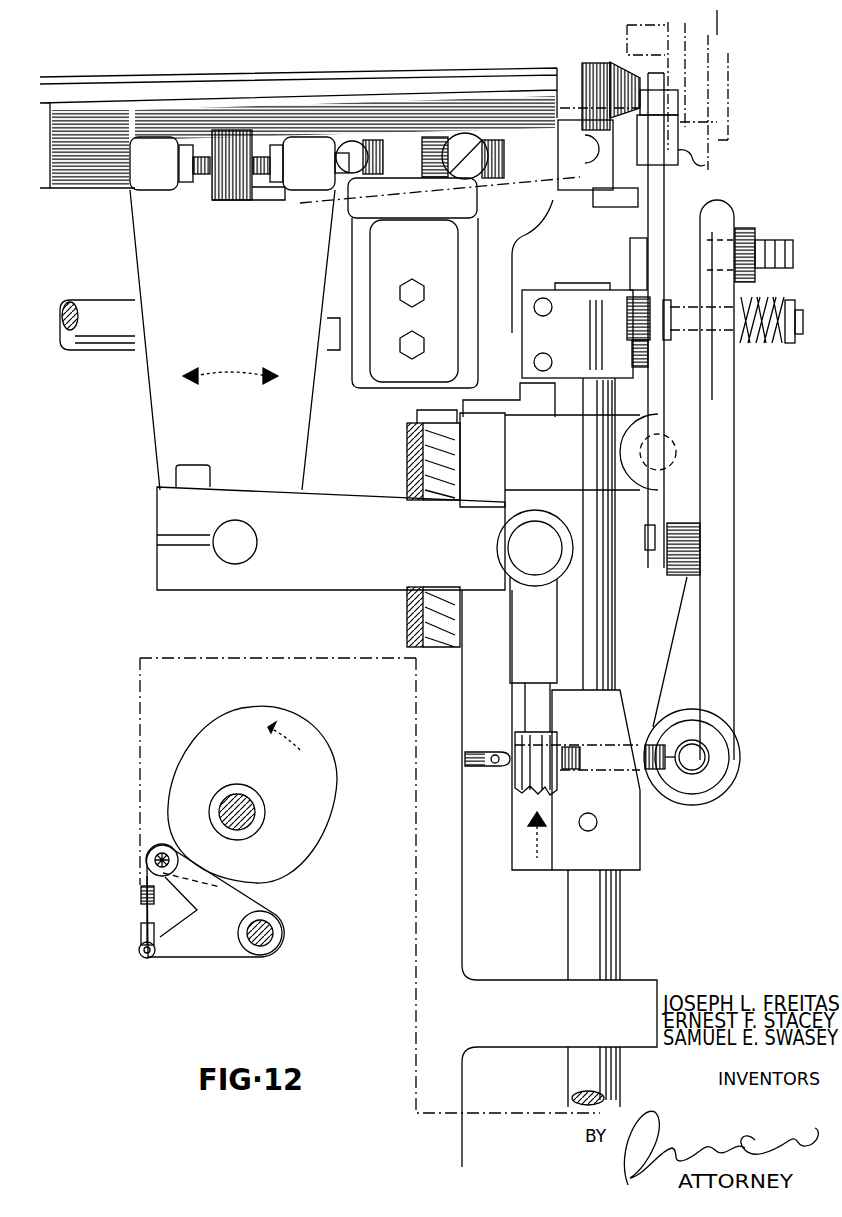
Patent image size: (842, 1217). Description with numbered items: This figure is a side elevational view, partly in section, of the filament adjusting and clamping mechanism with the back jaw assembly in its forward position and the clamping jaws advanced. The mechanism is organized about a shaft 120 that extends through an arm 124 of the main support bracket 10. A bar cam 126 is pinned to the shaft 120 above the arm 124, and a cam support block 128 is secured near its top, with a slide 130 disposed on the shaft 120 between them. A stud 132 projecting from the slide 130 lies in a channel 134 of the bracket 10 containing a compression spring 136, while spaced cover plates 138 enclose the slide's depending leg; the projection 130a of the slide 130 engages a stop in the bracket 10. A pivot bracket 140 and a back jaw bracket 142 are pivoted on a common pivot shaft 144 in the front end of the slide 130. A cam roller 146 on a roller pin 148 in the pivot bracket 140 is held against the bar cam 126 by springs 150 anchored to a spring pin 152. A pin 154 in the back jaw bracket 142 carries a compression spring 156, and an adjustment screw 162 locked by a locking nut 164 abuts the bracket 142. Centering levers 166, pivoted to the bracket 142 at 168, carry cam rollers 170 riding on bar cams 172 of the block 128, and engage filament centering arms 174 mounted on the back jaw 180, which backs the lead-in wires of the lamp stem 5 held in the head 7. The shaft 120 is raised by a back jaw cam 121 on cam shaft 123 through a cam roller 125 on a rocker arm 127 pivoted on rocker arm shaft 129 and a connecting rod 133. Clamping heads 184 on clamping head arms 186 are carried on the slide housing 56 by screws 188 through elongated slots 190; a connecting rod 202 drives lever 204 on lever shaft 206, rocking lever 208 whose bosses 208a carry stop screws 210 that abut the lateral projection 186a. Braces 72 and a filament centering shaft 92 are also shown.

The slide housing 56 is at (98, 137).
The stop screws 210 is at (198, 155).
The lateral projection 186a is at (230, 152).
The bosses 208a is at (157, 190).
The screws 188 is at (352, 140).
The elongated slots 190 is at (422, 140).
The clamping head arm 186 is at (558, 150).
The clamping head 184 is at (597, 55).
The lamp stem 5 is at (637, 68).
The head 7 is at (732, 53).
The filament centering arm 174 is at (678, 105).
The back jaw 180 is at (705, 162).
The back jaw bracket 142 is at (687, 203).
The locking nut 164 is at (748, 228).
The adjustment screw 162 is at (760, 240).
The centering levers 166 is at (647, 218).
The bar cam 172 is at (630, 246).
The cam roller 170 is at (627, 297).
The compression spring 156 is at (768, 297).
The pin 154 is at (795, 320).
The main support bracket 10 is at (524, 240).
The cam support block 128 is at (528, 297).
The braces 72 is at (425, 262).
The projection 130a is at (509, 397).
The pivot shaft 144 is at (632, 418).
The lever 208 is at (252, 309).
The filament centering shaft 92 is at (107, 352).
The cover plates 138 is at (417, 420).
The channel 134 is at (420, 445).
The stud 132 is at (415, 465).
The slide 130 is at (597, 468).
The pivot connection 168 is at (702, 548).
The lever shaft 206 is at (232, 563).
The lever 204 is at (326, 582).
The compression spring 136 is at (415, 628).
The back jaw cam 121 is at (315, 760).
The back jaw cam shaft 123 is at (258, 818).
The cam roller 125 is at (147, 859).
The connecting rod 133 is at (135, 898).
The rocker arm shaft 129 is at (276, 933).
The rocker arm 127 is at (197, 953).
The springs 150 is at (577, 747).
The spring pin 152 is at (492, 762).
The connecting rod 202 is at (557, 772).
The pivot bracket 140 is at (722, 702).
The roller pin 148 is at (708, 755).
The cam roller 146 is at (728, 798).
The bar cam 126 is at (638, 836).
The shaft 120 is at (613, 952).
The arm 124 is at (657, 990).